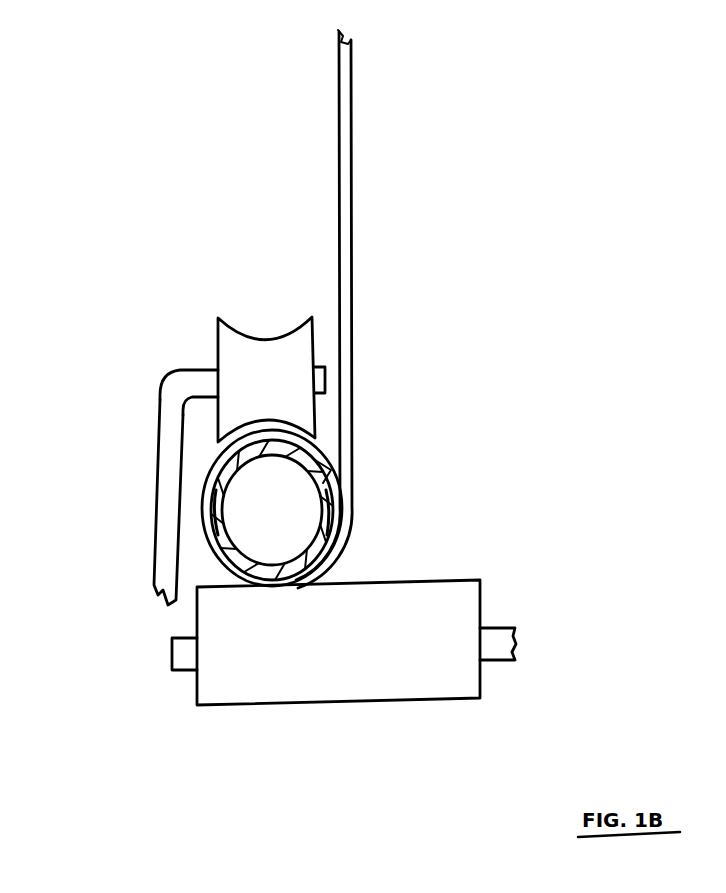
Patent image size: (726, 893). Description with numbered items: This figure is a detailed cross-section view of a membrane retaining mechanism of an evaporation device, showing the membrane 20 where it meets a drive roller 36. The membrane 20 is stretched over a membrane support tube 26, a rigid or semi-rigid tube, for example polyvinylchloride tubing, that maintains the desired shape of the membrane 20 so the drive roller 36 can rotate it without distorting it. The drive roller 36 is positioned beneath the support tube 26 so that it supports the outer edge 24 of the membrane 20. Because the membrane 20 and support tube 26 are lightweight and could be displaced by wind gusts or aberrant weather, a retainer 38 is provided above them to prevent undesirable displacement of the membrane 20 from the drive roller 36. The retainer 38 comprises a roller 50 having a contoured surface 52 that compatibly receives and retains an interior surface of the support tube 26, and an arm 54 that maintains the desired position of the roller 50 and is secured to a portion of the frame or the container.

The membrane 20 is at (353, 242).
The outer edge 24 is at (267, 588).
The membrane support tube 26 is at (325, 493).
The drive roller 36 is at (375, 688).
The retainer 38 is at (186, 408).
The roller 50 is at (217, 352).
The contoured surface 52 is at (280, 333).
The arm 54 is at (157, 447).